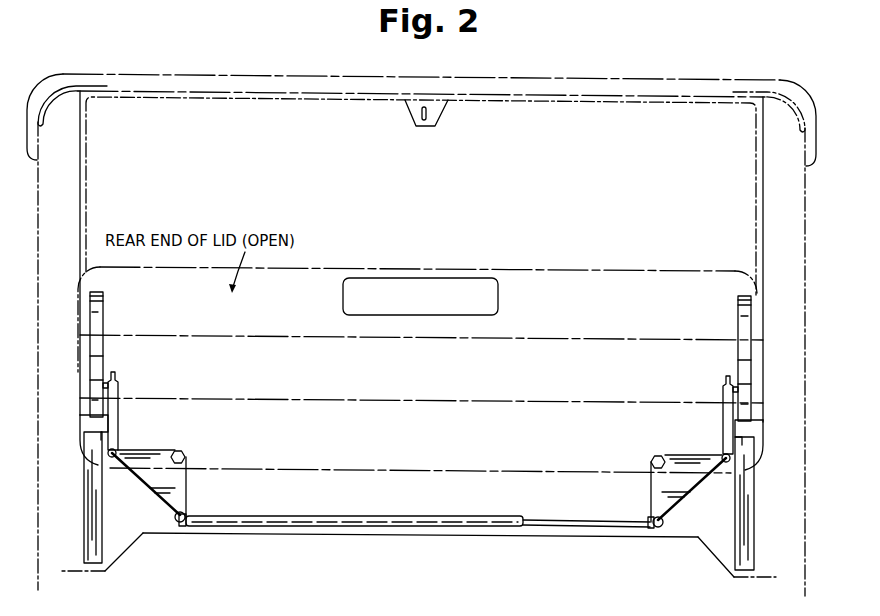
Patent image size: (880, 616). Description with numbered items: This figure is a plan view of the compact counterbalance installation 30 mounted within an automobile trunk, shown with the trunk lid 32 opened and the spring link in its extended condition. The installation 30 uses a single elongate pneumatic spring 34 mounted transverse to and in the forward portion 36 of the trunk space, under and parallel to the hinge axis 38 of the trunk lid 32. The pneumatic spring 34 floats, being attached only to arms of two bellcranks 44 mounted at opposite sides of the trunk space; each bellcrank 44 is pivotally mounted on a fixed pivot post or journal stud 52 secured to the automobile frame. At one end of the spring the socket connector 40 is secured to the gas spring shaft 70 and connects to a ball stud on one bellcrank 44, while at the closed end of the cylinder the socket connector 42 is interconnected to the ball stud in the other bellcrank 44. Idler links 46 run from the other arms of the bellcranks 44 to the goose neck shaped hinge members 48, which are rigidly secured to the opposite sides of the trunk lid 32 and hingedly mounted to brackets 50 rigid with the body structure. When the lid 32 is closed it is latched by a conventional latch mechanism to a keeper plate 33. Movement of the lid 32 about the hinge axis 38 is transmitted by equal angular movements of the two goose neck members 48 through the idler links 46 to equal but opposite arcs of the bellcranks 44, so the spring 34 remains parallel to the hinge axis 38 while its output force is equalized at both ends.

The counterbalance installation 30 is at (476, 468).
The trunk lid 32 is at (538, 277).
The keeper plate 33 is at (433, 110).
The pneumatic spring 34 is at (292, 516).
The forward portion of the trunk space 36 is at (388, 410).
The hinge axis 38 is at (78, 419).
The pivotal end fitting 40 is at (657, 528).
The pivotal end fitting 42 is at (180, 523).
The bellcrank 44 is at (188, 487).
The idler link 46 is at (118, 412).
The goose neck hinge member 48 is at (97, 341).
The bracket 50 is at (88, 500).
The fixed pivot post 52 is at (181, 450).
The gas spring shaft 70 is at (560, 518).